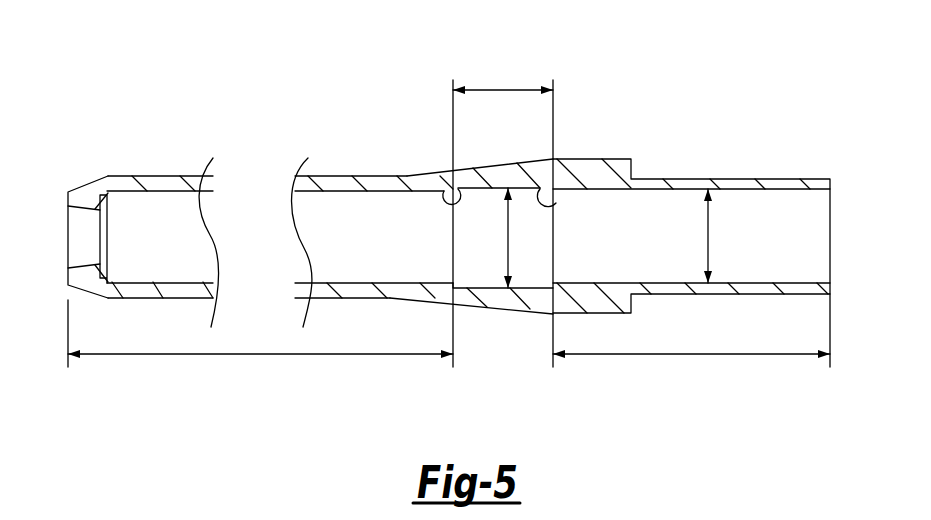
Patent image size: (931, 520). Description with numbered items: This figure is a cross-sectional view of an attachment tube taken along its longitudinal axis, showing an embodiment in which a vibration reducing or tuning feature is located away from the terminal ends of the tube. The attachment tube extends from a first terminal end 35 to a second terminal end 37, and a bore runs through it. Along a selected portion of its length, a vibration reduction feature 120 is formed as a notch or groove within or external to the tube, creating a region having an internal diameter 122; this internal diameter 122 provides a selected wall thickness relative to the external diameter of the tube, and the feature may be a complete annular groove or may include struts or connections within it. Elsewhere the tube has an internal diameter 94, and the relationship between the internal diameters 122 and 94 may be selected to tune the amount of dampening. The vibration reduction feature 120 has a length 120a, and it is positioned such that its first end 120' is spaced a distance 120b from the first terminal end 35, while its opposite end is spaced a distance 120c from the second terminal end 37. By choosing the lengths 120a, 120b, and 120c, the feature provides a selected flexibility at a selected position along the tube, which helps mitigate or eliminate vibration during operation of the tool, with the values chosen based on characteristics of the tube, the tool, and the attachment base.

The second terminal end 37 is at (68, 206).
The vibration reduction feature 120 is at (314, 266).
The first end 120' is at (600, 167).
The first terminal end 35 is at (830, 179).
The length 120a is at (493, 88).
The distance 120b is at (725, 355).
The distance 120c is at (328, 354).
The internal diameter 122 is at (510, 237).
The internal diameter 94 is at (709, 237).